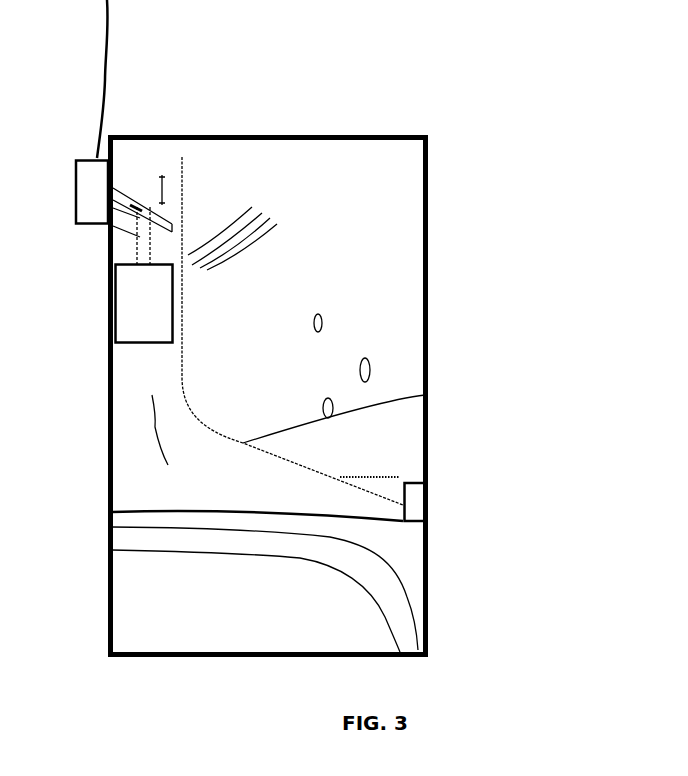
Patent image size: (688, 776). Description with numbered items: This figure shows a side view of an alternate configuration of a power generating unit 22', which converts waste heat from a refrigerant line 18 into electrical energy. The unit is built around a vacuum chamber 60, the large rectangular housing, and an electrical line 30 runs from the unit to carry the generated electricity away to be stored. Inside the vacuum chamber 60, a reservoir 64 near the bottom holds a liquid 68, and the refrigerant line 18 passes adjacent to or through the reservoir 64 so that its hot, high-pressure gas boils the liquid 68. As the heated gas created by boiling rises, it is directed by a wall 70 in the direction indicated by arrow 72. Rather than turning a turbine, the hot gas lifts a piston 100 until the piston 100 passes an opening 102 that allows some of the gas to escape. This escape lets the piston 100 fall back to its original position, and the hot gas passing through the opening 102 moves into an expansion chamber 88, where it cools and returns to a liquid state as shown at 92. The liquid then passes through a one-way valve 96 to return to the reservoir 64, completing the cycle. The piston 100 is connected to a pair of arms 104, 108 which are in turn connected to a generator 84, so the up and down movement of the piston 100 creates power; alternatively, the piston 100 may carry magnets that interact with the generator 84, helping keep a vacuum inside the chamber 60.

The refrigerant line 18 is at (397, 577).
The power generating unit 22' is at (268, 99).
The electrical line 30 is at (100, 70).
The vacuum chamber 60 is at (428, 258).
The reservoir 64 is at (132, 592).
The liquid 68 is at (110, 512).
The wall 70 is at (425, 395).
The arrow 72 is at (150, 427).
The generator 84 is at (85, 197).
The expansion chamber 88 is at (380, 195).
The liquid state 92 is at (400, 470).
The one-way valve 96 is at (428, 502).
The piston 100 is at (137, 292).
The opening 102 is at (185, 260).
The arm 104 is at (76, 223).
The arm 108 is at (125, 197).